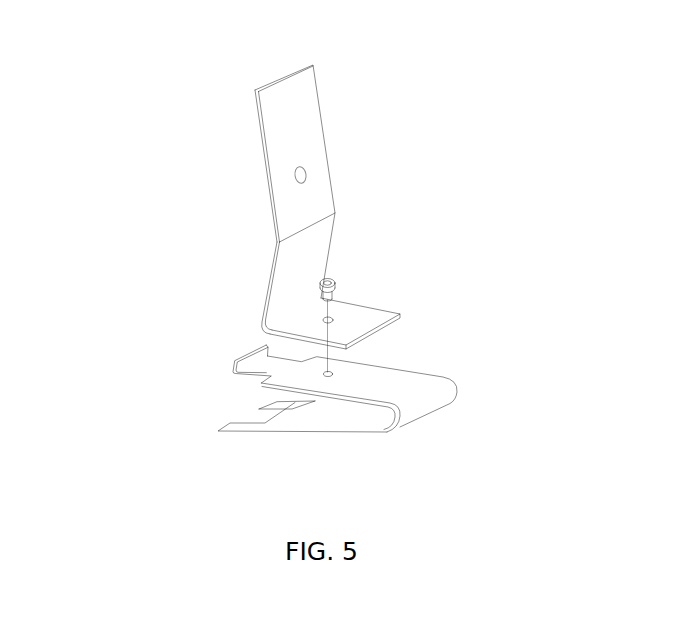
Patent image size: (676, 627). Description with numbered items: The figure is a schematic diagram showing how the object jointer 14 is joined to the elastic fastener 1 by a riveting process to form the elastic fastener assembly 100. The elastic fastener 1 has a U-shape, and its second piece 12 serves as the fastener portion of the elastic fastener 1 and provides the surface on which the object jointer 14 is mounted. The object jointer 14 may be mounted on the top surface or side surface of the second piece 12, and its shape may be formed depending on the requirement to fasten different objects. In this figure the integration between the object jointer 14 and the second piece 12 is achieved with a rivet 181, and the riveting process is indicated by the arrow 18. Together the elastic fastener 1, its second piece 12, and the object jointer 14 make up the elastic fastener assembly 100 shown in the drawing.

The elastic fastener assembly 100 is at (168, 137).
The object jointer 14 is at (324, 132).
The arrow 18 is at (220, 319).
The rivet 181 is at (335, 280).
The elastic fastener 1 is at (443, 342).
The second piece 12 is at (317, 395).